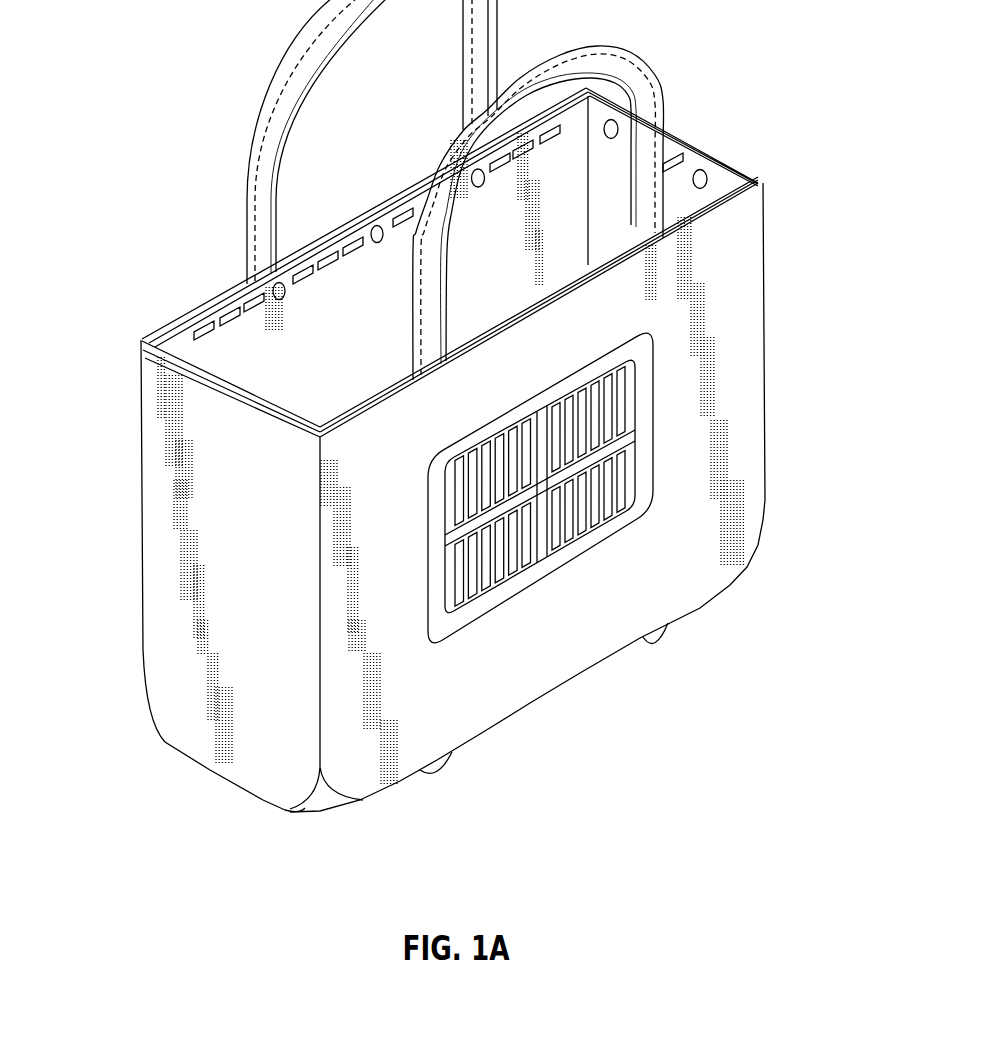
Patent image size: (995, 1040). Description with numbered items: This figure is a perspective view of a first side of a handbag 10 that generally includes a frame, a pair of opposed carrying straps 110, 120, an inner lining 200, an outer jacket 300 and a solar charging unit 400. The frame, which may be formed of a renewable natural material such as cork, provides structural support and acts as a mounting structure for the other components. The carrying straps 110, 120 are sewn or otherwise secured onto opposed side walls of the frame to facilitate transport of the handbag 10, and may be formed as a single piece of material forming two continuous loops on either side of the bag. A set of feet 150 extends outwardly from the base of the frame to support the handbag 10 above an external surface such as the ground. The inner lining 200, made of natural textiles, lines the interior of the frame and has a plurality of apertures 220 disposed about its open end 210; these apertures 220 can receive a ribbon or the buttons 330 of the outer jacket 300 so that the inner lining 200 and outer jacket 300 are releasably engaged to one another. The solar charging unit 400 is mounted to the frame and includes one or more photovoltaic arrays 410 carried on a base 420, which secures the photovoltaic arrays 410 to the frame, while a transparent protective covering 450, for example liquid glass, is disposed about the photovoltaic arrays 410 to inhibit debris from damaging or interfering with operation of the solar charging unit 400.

The handbag 10 is at (110, 45).
The carrying strap 110 is at (643, 87).
The carrying strap 120 is at (270, 118).
The feet 150 is at (437, 773).
The inner lining 200 is at (567, 213).
The open end 210 is at (683, 138).
The apertures 220 is at (406, 205).
The outer jacket 300 is at (752, 284).
The buttons 330 is at (375, 225).
The solar charging unit 400 is at (414, 634).
The photovoltaic arrays 410 is at (518, 527).
The base 420 is at (640, 512).
The transparent protective covering 450 is at (499, 557).